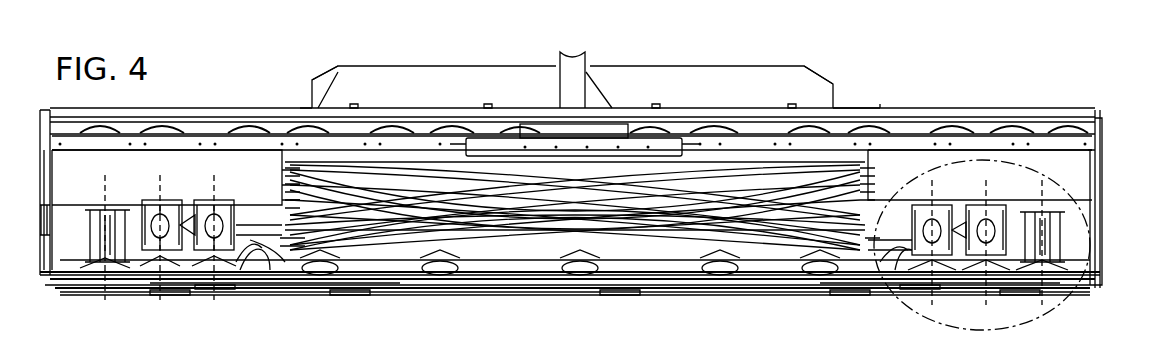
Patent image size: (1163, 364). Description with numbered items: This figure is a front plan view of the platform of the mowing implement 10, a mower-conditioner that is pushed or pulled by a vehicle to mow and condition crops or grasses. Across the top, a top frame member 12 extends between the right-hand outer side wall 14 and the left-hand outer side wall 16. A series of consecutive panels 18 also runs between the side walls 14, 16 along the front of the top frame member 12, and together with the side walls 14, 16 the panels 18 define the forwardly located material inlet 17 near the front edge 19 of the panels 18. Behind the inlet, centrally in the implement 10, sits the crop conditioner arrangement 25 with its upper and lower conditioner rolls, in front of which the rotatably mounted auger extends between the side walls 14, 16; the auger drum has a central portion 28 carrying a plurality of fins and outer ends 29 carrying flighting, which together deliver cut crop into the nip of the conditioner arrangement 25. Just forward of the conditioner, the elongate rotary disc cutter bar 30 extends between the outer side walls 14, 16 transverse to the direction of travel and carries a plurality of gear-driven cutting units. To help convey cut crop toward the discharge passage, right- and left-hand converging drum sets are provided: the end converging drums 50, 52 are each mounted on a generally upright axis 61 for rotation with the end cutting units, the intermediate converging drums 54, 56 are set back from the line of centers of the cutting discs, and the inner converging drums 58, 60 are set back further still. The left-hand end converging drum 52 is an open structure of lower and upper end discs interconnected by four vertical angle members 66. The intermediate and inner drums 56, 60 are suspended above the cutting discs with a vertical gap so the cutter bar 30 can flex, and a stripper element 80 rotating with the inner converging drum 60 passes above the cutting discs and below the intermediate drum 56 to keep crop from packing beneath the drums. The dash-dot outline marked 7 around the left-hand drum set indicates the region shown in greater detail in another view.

The mowing implement 10 is at (890, 60).
The top frame member 12 is at (248, 108).
The right-hand outer side wall 14 is at (38, 152).
The left-hand outer side wall 16 is at (1104, 195).
The material inlet 17 is at (250, 330).
The panels 18 is at (200, 132).
The front edge of the panels 19 is at (52, 150).
The crop conditioner arrangement 25 is at (730, 162).
The central portion 28 is at (580, 255).
The outer ends 29 is at (312, 278).
The rotary disc cutter bar 30 is at (485, 315).
The right-hand end converging drum 50 is at (72, 287).
The left-hand end converging drum 52 is at (1096, 200).
The right-hand intermediate converging drum 54 is at (145, 188).
The left-hand intermediate converging drum 56 is at (993, 190).
The right-hand inner converging drum 58 is at (208, 188).
The left-hand inner converging drum 60 is at (942, 190).
The upright axis 61 is at (212, 300).
The vertical angle members 66 is at (1068, 290).
The section view indicator 7 is at (948, 170).
The stripper element 80 is at (245, 288).